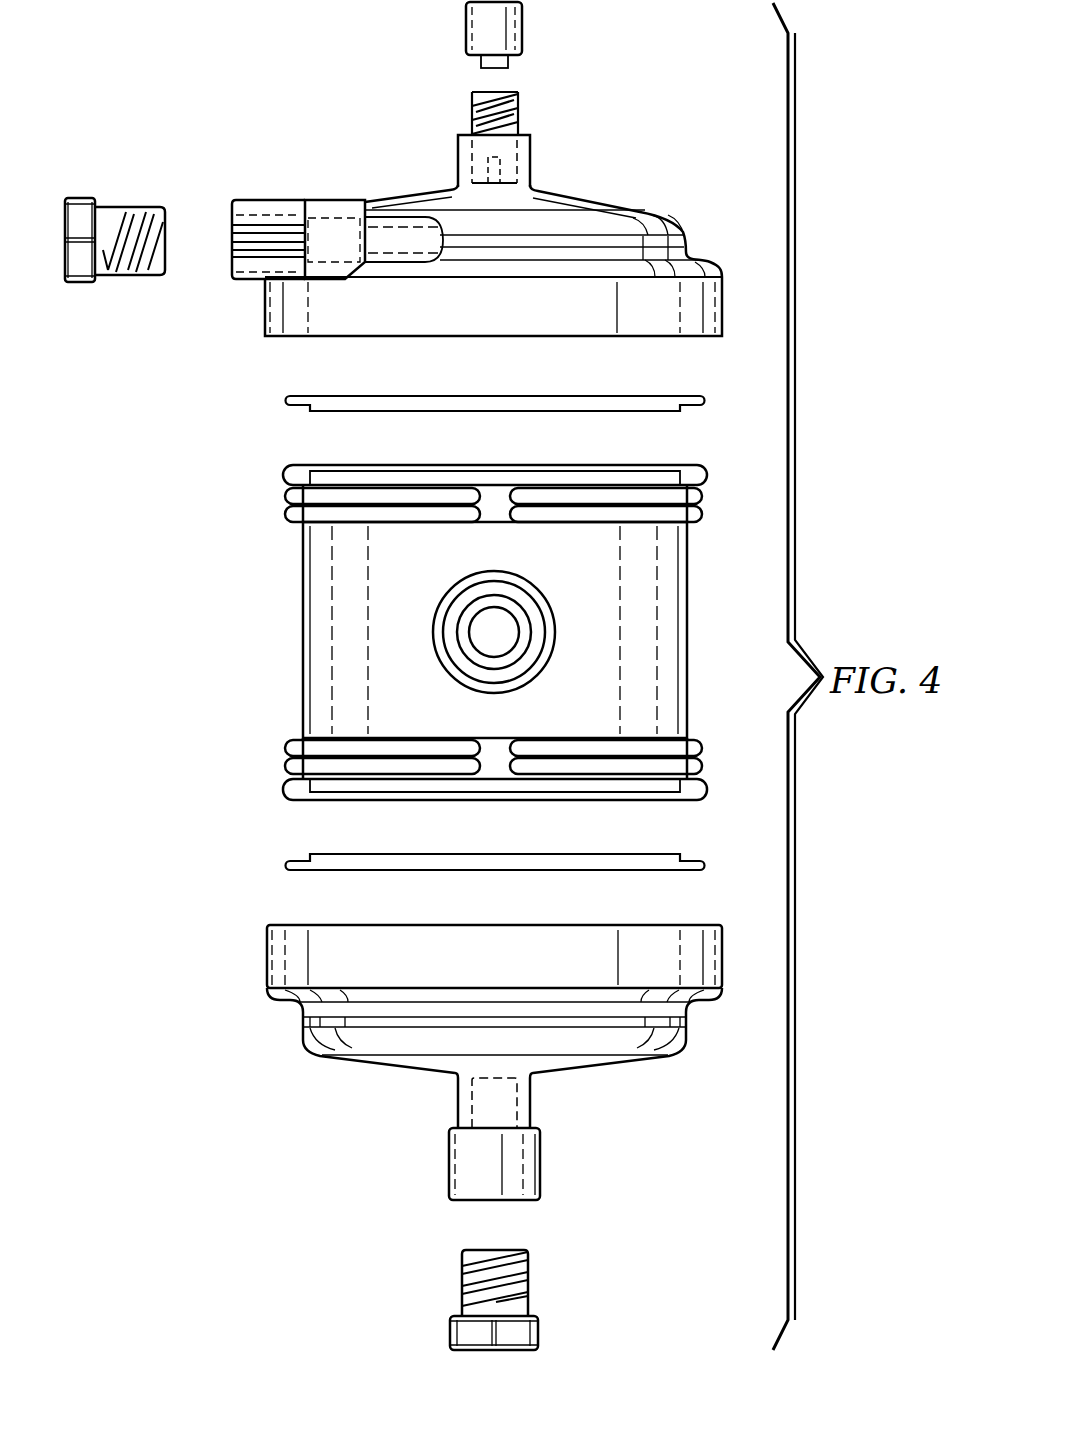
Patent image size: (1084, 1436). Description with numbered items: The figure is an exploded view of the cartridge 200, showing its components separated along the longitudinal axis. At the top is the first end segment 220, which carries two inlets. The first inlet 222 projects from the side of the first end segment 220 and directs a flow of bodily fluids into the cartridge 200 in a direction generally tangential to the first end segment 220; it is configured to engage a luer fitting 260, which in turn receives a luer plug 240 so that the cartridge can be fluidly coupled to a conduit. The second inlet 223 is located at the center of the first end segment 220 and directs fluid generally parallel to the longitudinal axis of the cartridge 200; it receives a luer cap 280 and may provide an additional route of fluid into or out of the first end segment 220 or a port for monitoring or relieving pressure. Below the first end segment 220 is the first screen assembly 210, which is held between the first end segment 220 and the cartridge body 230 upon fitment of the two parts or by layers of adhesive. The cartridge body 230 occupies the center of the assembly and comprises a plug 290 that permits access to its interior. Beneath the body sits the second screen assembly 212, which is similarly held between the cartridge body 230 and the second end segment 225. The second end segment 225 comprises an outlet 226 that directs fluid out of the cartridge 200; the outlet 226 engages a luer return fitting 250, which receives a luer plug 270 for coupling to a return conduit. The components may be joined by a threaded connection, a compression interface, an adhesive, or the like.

The cartridge 200 is at (258, 48).
The luer cap 280 is at (523, 25).
The second inlet 223 is at (532, 150).
The first end segment 220 is at (410, 190).
The first inlet 222 is at (333, 200).
The luer fitting 260 is at (258, 200).
The luer plug 240 is at (95, 283).
The first screen assembly 210 is at (650, 395).
The cartridge body 230 is at (300, 572).
The plug 290 is at (508, 685).
The second screen assembly 212 is at (650, 872).
The second end segment 225 is at (620, 1065).
The outlet 226 is at (526, 1100).
The luer return fitting 250 is at (540, 1160).
The luer plug 270 is at (538, 1332).